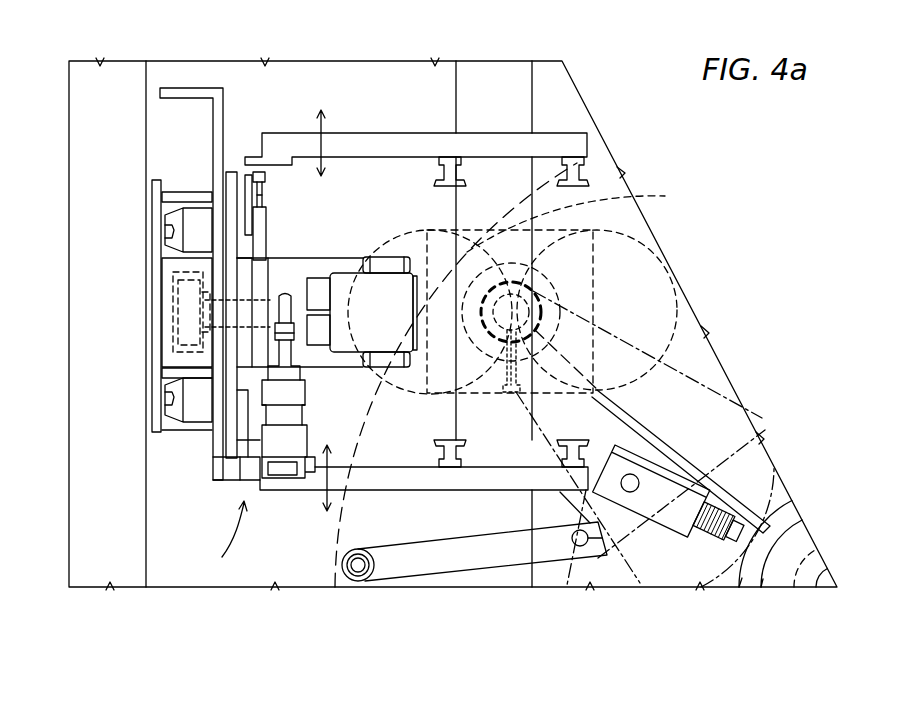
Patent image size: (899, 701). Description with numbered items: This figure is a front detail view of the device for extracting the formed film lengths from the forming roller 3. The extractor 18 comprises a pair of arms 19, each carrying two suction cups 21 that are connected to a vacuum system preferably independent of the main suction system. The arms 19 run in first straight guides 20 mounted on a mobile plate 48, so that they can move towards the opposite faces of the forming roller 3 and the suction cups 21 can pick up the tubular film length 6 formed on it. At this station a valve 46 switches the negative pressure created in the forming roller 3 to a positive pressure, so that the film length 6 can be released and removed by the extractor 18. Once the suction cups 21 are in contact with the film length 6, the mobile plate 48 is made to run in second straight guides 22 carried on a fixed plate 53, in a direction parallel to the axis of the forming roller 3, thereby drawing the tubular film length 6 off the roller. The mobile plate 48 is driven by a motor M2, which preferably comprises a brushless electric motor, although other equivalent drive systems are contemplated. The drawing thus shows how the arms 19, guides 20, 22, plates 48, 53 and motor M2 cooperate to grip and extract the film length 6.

The forming roller 3 is at (628, 287).
The film length 6 is at (664, 196).
The extractor 18 is at (225, 539).
The arms 19 is at (387, 143).
The first straight guides 20 is at (238, 182).
The suction cups 21 is at (462, 184).
The second straight guides 22 is at (168, 231).
The valve 46 is at (675, 522).
The mobile plate 48 is at (218, 130).
The fixed plate 53 is at (158, 309).
The motor M2 is at (342, 288).